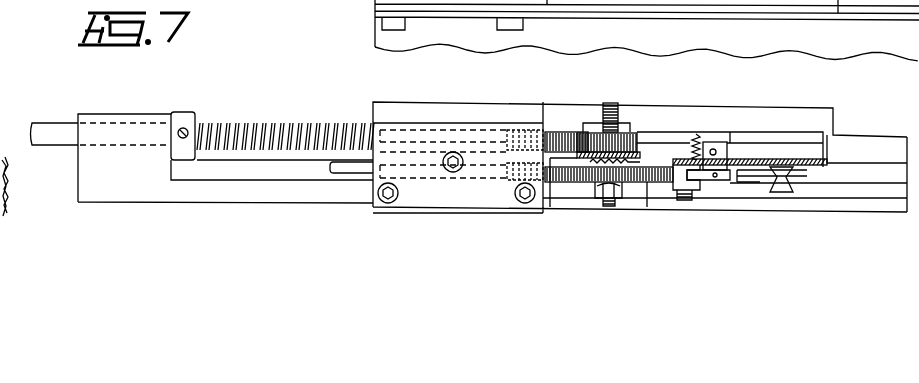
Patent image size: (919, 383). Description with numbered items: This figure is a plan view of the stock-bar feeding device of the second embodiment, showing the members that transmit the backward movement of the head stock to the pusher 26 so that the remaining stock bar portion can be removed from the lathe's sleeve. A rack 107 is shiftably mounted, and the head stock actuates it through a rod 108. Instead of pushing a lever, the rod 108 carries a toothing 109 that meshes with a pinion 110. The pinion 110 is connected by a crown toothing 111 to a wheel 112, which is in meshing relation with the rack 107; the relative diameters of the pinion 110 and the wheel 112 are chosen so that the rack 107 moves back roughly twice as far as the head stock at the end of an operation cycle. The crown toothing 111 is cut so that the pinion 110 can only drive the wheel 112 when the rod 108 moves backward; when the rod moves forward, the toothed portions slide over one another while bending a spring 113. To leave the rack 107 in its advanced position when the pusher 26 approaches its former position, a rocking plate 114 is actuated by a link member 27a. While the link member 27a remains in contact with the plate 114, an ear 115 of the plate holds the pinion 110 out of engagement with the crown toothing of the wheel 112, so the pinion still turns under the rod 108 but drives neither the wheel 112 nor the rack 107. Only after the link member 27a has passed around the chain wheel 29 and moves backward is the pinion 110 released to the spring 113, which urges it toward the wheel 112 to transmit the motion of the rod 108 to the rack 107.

The rod 108 is at (61, 128).
The rack 107 is at (520, 165).
The toothing 109 is at (562, 135).
The pinion 110 is at (598, 133).
The crown toothing 111 is at (631, 155).
The ear 115 is at (642, 158).
The spring 113 is at (696, 134).
The rocking plate 114 is at (752, 159).
The wheel 112 is at (655, 182).
The link member 27a is at (695, 191).
The chain wheel 29 is at (716, 181).
The pusher 26 is at (782, 180).